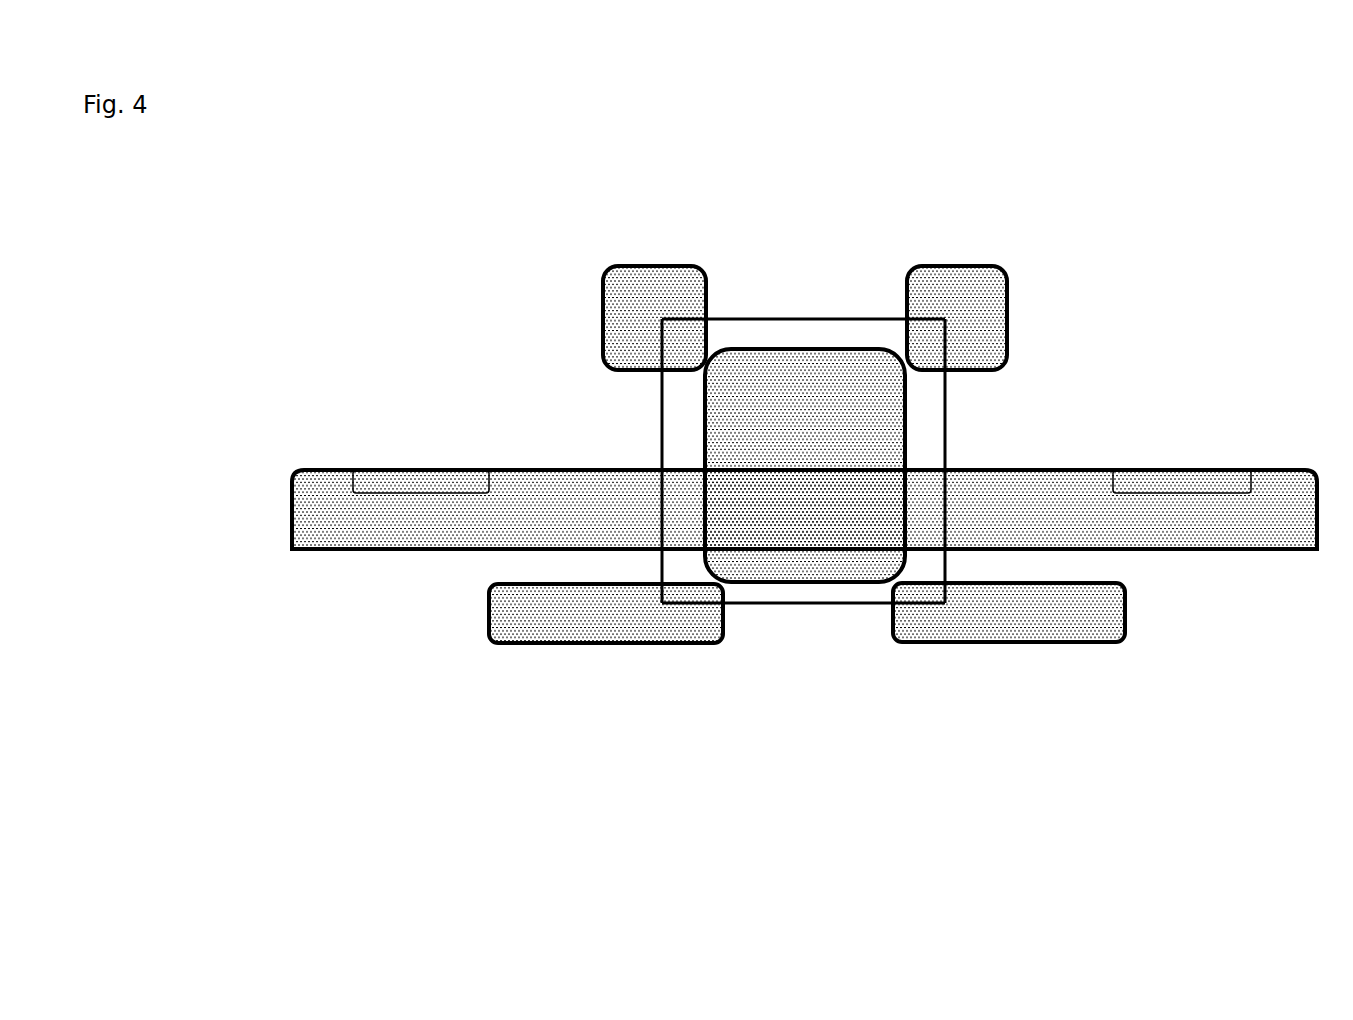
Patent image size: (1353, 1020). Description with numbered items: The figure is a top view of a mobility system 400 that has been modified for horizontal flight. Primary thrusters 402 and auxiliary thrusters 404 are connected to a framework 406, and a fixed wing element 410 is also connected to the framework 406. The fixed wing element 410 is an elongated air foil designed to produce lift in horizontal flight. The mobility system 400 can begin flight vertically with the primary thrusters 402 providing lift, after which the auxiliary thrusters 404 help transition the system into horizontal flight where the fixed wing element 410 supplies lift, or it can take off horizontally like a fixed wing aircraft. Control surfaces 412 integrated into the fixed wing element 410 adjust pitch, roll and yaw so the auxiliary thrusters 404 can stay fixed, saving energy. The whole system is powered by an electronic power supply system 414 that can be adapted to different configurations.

The mobility system 400 is at (330, 296).
The primary thrusters 402 is at (607, 643).
The auxiliary thrusters 404 is at (1007, 318).
The framework 406 is at (803, 603).
The fixed wing element 410 is at (342, 525).
The control surfaces 412 is at (1180, 470).
The electronic power supply system 414 is at (803, 348).